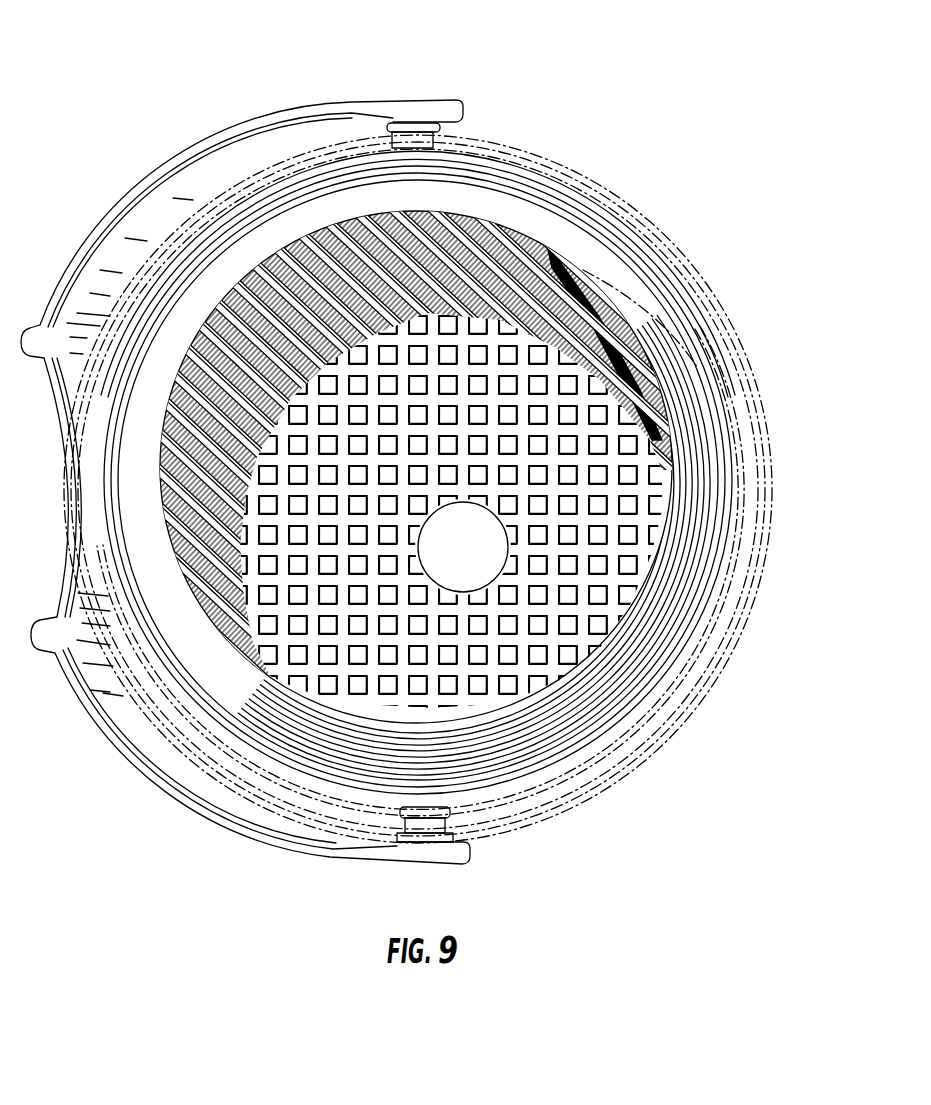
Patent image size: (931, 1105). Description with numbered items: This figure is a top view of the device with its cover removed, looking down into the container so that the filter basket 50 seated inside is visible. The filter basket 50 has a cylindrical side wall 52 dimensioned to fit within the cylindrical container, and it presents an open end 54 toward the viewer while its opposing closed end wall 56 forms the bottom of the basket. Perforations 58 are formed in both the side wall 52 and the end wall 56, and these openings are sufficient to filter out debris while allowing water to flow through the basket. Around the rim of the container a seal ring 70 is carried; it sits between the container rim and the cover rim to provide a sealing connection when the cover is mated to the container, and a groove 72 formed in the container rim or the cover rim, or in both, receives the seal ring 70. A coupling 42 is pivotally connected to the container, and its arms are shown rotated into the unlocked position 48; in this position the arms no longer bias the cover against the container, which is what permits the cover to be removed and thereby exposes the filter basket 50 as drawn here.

The coupling 42 is at (174, 800).
The unlocked position 48 is at (228, 110).
The filter basket 50 is at (622, 322).
The cylindrical side wall 52 is at (548, 248).
The open end 54 is at (466, 222).
The closed end wall 56 is at (375, 444).
The perforations 58 is at (600, 550).
The seal ring 70 is at (714, 604).
The groove 72 is at (714, 338).